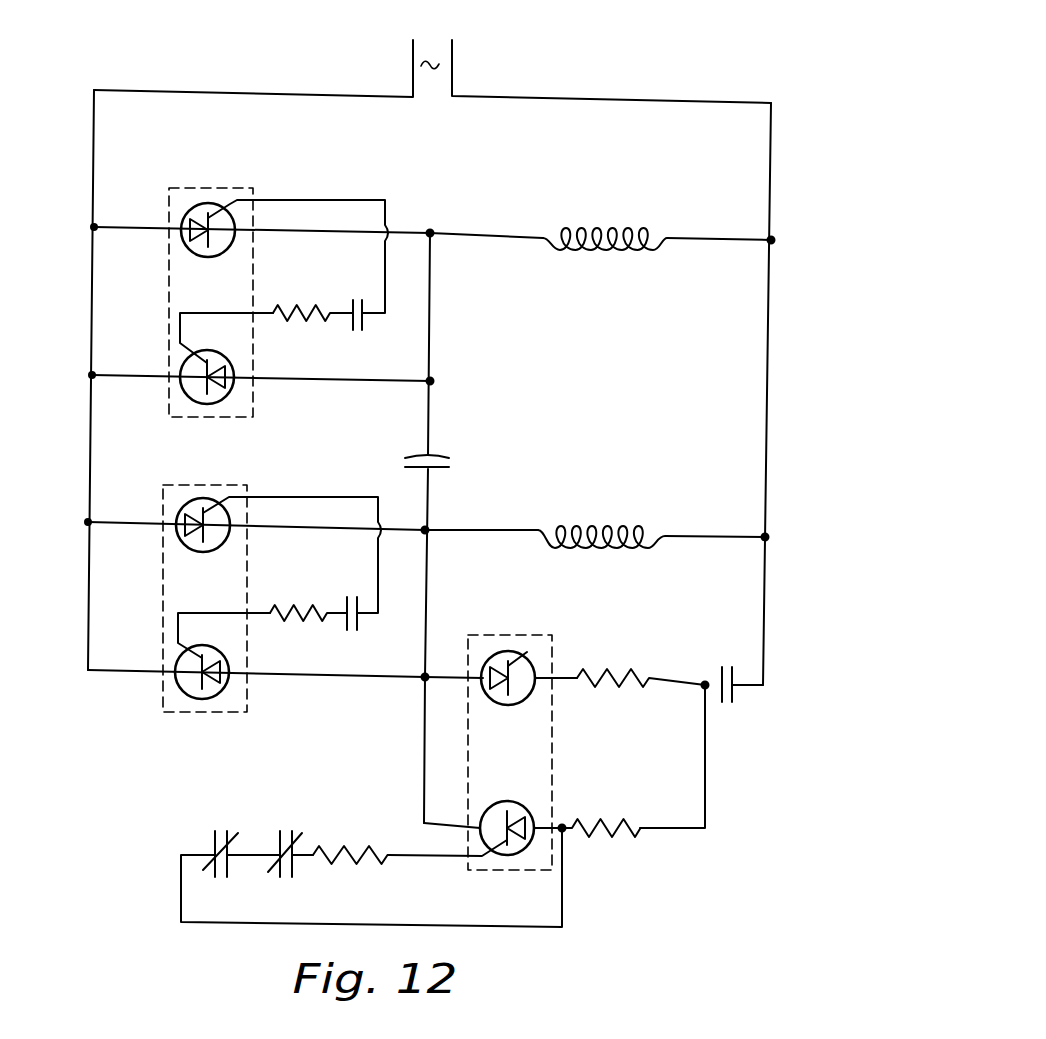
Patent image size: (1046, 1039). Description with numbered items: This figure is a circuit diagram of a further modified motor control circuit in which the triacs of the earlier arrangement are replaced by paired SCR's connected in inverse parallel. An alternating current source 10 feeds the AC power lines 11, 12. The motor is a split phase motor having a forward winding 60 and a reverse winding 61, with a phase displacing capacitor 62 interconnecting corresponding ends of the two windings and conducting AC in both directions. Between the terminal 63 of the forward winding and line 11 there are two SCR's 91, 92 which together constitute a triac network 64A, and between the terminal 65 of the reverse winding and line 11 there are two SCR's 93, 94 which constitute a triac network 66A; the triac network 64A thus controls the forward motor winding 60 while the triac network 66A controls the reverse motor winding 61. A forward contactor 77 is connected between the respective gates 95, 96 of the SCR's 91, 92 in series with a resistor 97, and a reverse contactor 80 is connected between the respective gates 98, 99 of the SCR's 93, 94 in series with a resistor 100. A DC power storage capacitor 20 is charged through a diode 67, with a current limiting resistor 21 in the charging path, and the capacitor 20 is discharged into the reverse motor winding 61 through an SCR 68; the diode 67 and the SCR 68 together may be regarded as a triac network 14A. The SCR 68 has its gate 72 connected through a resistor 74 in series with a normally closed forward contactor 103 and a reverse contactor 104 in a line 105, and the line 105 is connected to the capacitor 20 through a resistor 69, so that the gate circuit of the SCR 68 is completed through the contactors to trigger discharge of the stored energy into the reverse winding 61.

The alternating current source 10 is at (430, 56).
The AC power line 11 is at (93, 152).
The AC power line 12 is at (771, 173).
The triac network 14A is at (470, 641).
The DC power storage capacitor 20 is at (721, 667).
The current limiting resistor 21 is at (620, 672).
The forward winding 60 is at (599, 234).
The reverse winding 61 is at (622, 525).
The phase displacing capacitor 62 is at (438, 455).
The terminal 63 is at (432, 232).
The triac network 64A is at (256, 250).
The terminal 65 is at (430, 535).
The triac network 66A is at (163, 588).
The diode 67 is at (527, 652).
The SCR 68 is at (512, 800).
The resistor 69 is at (600, 836).
The gate 72 is at (479, 855).
The resistor 74 is at (347, 843).
The forward contactor 77 is at (362, 330).
The reverse contactor 80 is at (350, 631).
The SCR 91 is at (180, 215).
The SCR 92 is at (185, 400).
The SCR 93 is at (180, 512).
The SCR 94 is at (180, 690).
The gate 95 is at (225, 200).
The gate 96 is at (188, 352).
The resistor 97 is at (297, 306).
The gate 98 is at (228, 499).
The gate 99 is at (178, 650).
The resistor 100 is at (288, 605).
The normally closed forward contactor 103 is at (218, 830).
The reverse contactor 104 is at (286, 833).
The line 105 is at (253, 924).